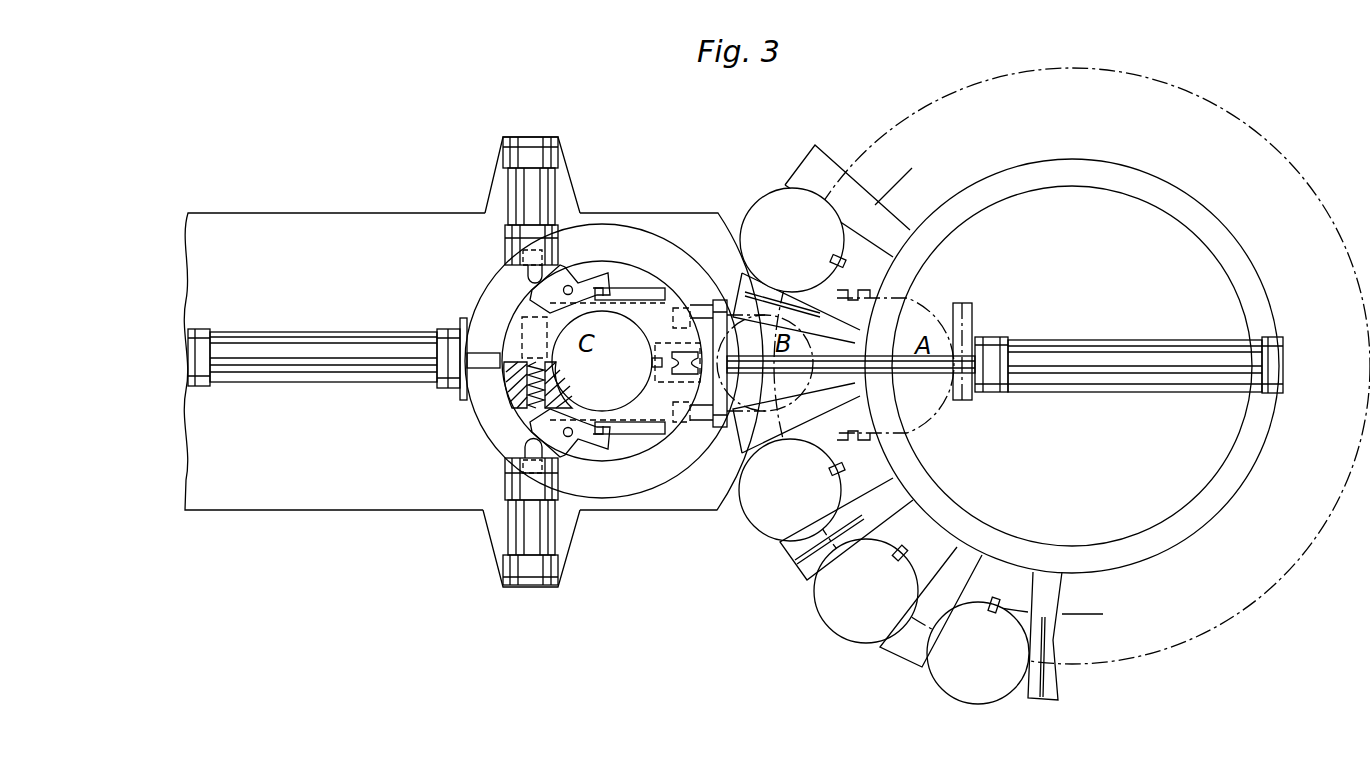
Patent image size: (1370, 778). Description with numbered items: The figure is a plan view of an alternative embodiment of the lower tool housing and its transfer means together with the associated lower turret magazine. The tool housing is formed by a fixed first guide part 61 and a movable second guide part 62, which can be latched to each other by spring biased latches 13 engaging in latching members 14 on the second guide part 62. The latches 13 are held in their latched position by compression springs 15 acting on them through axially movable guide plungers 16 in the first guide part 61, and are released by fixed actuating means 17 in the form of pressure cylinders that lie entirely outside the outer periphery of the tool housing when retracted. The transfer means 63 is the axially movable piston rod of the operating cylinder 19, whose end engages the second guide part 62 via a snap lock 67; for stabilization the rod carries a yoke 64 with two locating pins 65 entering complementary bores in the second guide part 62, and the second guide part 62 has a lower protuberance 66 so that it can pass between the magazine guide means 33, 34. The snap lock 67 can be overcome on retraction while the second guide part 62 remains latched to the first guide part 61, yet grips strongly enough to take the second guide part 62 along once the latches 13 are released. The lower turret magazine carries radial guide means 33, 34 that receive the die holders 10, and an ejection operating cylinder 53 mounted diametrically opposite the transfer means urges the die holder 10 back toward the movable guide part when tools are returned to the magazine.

The die holder 10 is at (815, 474).
The spring biased latch 13 is at (588, 445).
The latching member 14 is at (630, 290).
The compression spring 15 is at (510, 392).
The guide plunger 16 is at (527, 405).
The actuating means 17 is at (523, 563).
The operating cylinder 19 is at (1130, 355).
The guide means 33 is at (905, 640).
The guide means 34 is at (805, 562).
The operating cylinder 53 is at (310, 350).
The first guide part 61 is at (512, 343).
The second guide part 62 is at (665, 320).
The transfer means 63 is at (940, 292).
The yoke 64 is at (713, 300).
The locating pin 65 is at (700, 405).
The lower protuberance 66 is at (670, 385).
The snap lock 67 is at (652, 356).